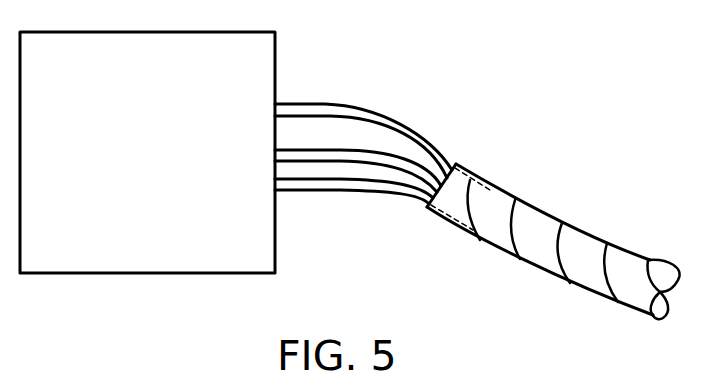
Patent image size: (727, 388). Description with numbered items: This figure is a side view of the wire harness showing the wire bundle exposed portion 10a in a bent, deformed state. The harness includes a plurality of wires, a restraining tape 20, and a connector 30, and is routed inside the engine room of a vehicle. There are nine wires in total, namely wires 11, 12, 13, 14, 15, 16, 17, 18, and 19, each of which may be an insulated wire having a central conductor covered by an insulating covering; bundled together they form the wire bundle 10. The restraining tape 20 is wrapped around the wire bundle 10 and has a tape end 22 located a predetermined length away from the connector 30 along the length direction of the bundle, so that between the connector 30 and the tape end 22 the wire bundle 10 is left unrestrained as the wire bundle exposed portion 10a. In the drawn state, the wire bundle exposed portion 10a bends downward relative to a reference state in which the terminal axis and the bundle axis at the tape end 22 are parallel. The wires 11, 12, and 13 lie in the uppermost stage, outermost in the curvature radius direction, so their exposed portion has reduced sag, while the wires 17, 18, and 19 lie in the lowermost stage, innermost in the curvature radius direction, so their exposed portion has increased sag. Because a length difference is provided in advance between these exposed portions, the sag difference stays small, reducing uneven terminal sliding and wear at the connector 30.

The wire bundle 10 is at (553, 221).
The wire bundle exposed portion 10a is at (422, 119).
The wire 11 is at (363, 99).
The wire 12 is at (363, 99).
The wire 13 is at (307, 103).
The wire 14 is at (373, 124).
The wire 15 is at (373, 124).
The wire 16 is at (352, 150).
The wire 17 is at (354, 228).
The wire 18 is at (354, 228).
The wire 19 is at (305, 191).
The restraining tape 20 is at (587, 240).
The tape end 22 is at (458, 158).
The connector 30 is at (160, 274).